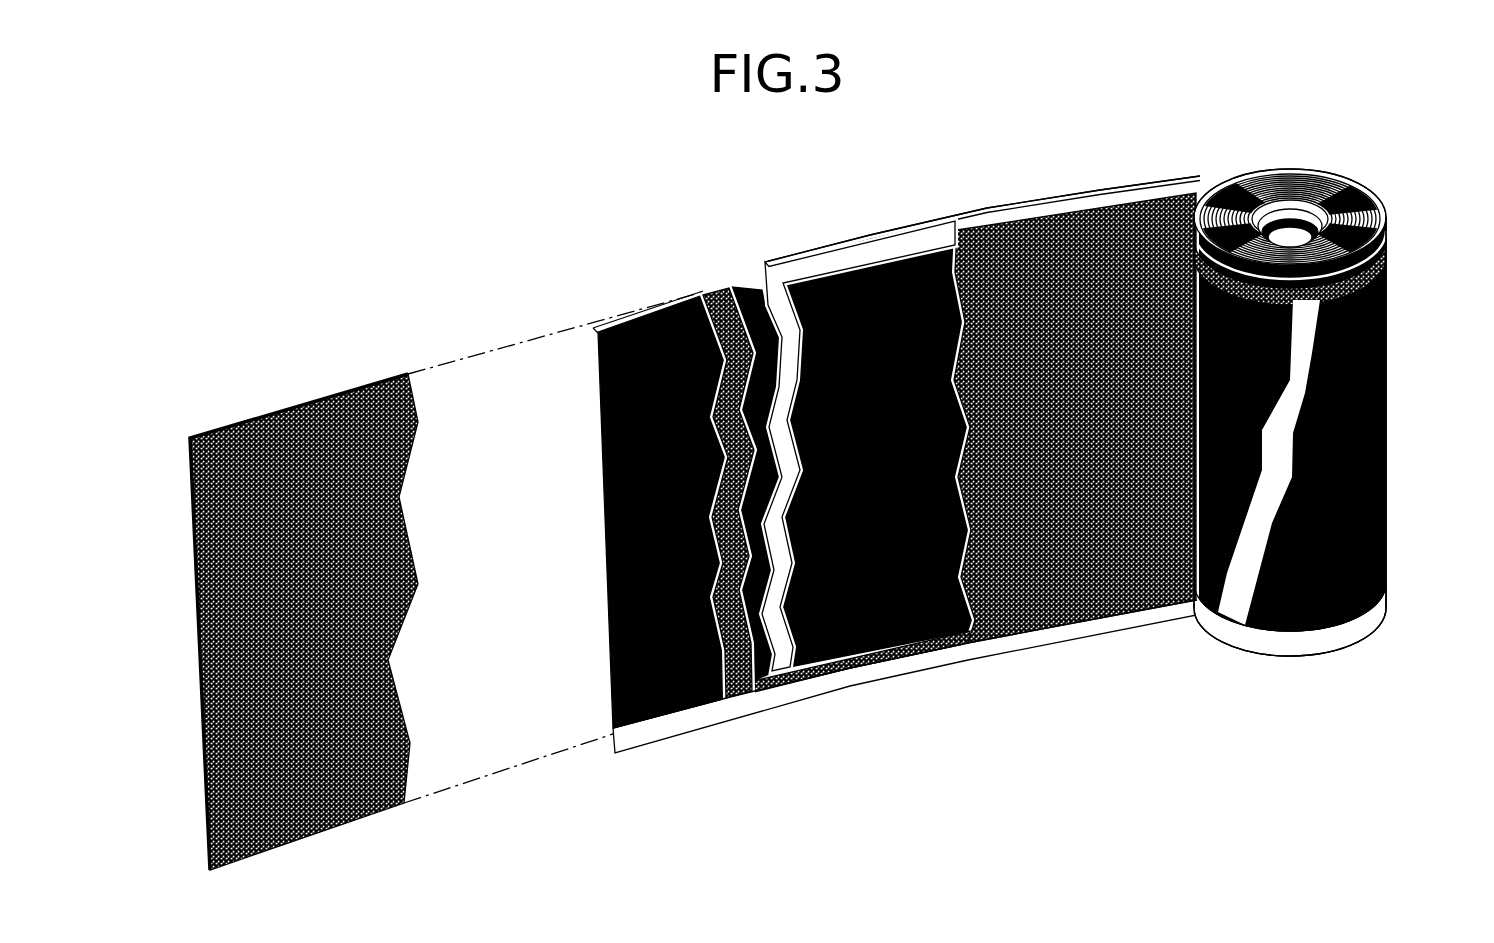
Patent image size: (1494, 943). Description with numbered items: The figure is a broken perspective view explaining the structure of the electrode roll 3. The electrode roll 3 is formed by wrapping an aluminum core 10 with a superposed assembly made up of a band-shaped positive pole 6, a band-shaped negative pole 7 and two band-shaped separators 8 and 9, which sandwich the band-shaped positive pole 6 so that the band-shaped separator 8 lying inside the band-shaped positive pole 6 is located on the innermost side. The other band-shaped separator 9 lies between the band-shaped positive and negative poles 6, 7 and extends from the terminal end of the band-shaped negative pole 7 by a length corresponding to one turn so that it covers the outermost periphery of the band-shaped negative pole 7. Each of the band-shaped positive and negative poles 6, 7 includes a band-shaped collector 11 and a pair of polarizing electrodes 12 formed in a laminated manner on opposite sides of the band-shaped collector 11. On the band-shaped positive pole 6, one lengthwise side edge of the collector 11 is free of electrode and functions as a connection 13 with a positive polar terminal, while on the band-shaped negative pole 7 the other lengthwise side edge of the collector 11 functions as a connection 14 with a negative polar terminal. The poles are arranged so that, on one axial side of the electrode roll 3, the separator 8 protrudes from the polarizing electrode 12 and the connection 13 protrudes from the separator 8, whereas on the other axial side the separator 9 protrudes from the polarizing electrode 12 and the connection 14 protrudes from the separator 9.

The electrode roll 3 is at (1385, 183).
The band-shaped positive pole 6 is at (930, 222).
The band-shaped negative pole 7 is at (682, 735).
The band-shaped separator 8 is at (1037, 240).
The band-shaped separator 9 is at (345, 420).
The aluminum core 10 is at (1302, 225).
The band-shaped collector 11 is at (845, 238).
The polarizing electrode 12 is at (662, 315).
The connection 13 is at (895, 245).
The connection 14 is at (725, 698).